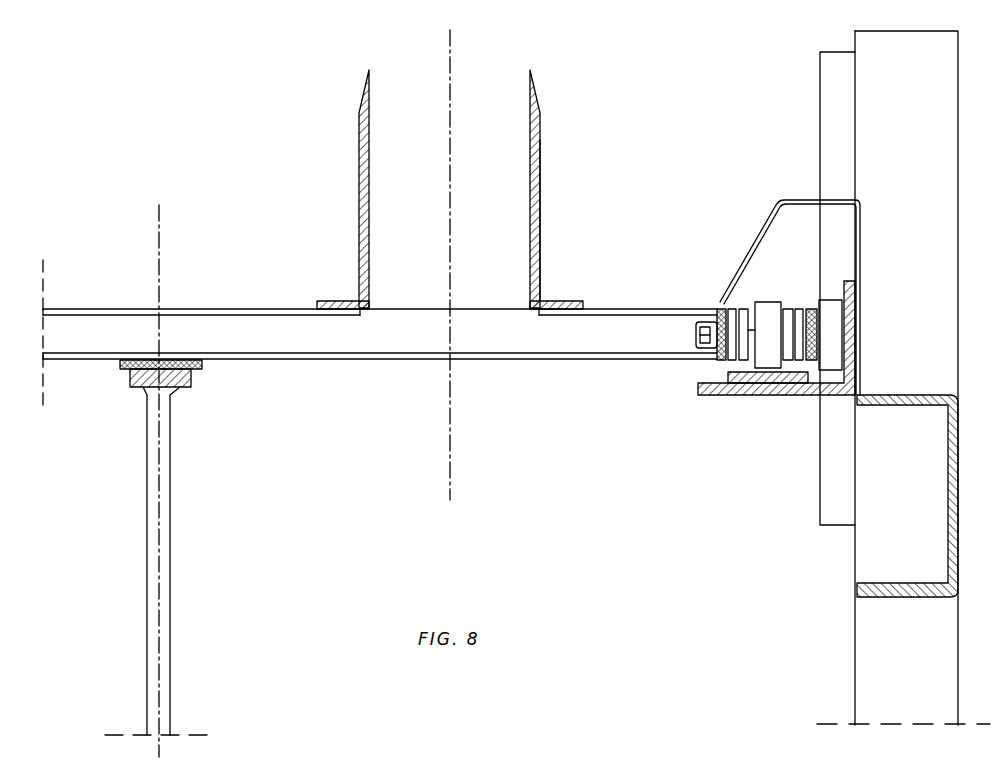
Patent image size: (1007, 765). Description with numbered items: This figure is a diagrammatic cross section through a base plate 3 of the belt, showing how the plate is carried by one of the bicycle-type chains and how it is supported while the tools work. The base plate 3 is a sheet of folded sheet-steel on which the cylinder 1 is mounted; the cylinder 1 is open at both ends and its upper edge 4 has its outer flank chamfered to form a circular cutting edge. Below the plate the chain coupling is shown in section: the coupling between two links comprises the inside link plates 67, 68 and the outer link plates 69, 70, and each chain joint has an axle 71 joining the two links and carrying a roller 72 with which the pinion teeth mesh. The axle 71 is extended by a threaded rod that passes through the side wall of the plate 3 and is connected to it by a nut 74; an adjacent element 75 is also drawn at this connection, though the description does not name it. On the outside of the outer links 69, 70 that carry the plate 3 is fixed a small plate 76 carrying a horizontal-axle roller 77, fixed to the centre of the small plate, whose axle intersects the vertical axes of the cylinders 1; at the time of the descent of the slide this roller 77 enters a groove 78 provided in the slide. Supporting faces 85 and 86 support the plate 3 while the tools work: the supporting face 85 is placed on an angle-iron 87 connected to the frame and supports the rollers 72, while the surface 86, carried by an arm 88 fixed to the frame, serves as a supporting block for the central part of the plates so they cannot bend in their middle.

The cylinder 1 is at (541, 216).
The base plate 3 is at (235, 309).
The upper edge 4 is at (540, 118).
The inside link plate 67 is at (743, 307).
The inside link plate 68 is at (787, 305).
The outer link plate 69 is at (731, 307).
The outer link plate 70 is at (799, 307).
The axle 71 is at (751, 332).
The roller 72 is at (767, 302).
The nut 74 is at (689, 337).
The nut 75 is at (718, 308).
The small plate 76 is at (812, 306).
The roller 77 is at (830, 299).
The groove 78 is at (830, 120).
The supporting face 85 is at (727, 382).
The supporting face 86 is at (203, 362).
The angle-iron 87 is at (758, 396).
The arm 88 is at (171, 528).